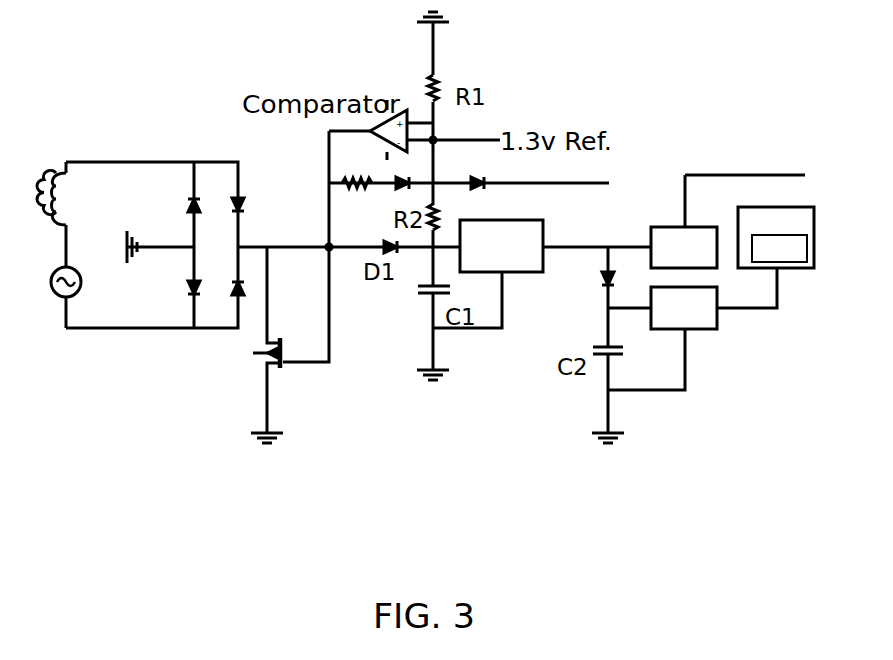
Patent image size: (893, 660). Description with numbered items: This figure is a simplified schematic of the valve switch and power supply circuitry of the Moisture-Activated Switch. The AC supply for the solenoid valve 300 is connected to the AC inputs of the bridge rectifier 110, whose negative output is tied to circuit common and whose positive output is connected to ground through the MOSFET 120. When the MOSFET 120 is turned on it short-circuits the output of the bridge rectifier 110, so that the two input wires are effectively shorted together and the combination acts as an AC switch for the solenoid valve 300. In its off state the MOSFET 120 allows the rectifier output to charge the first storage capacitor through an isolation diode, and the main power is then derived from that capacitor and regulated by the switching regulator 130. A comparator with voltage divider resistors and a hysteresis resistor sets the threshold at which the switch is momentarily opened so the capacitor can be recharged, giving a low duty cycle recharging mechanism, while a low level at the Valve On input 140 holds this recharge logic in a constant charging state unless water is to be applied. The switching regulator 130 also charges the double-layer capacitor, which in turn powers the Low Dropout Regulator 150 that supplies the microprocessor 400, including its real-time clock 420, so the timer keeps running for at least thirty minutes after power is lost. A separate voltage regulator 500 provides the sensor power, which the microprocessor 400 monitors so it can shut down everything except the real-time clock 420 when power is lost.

The solenoid valve 300 is at (75, 245).
The bridge rectifier 110 is at (155, 245).
The MOSFET 120 is at (290, 287).
The switching regulator 130 is at (488, 274).
The Valve On input 140 is at (469, 191).
The Low Dropout Regulator 150 is at (692, 329).
The microprocessor 400 is at (776, 237).
The real-time clock 420 is at (779, 249).
The voltage regulator 500 is at (712, 206).